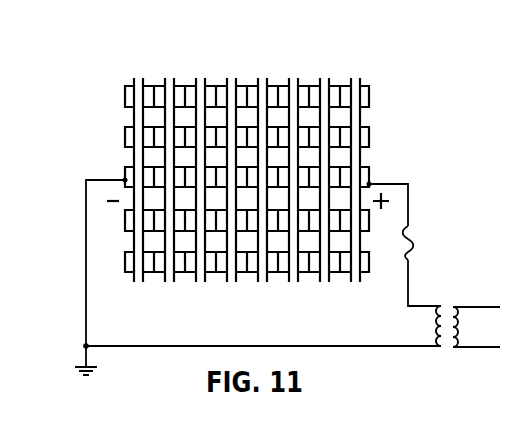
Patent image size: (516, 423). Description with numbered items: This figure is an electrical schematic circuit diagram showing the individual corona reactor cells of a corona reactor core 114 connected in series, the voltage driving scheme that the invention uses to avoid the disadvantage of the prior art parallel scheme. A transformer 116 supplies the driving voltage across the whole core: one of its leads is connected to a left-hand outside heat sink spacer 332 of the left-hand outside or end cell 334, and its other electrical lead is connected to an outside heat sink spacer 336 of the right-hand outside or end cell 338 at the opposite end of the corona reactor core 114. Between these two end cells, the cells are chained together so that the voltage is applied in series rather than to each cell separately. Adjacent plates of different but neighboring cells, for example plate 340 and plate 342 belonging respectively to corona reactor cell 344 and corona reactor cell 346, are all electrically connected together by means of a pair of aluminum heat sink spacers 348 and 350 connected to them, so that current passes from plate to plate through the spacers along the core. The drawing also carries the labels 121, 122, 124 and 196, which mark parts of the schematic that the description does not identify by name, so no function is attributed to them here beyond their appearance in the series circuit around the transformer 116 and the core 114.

The corona reactor core 114 is at (108, 77).
The electrode pair 121 is at (356, 82).
The left-hand outside heat sink spacer 332 is at (130, 276).
The left-hand outside or end cell 334 is at (150, 283).
The outside heat sink spacer 336 is at (362, 158).
The right-hand outside or end cell 338 is at (358, 121).
The plate 340 is at (258, 270).
The plate 342 is at (290, 266).
The corona reactor cell 344 is at (273, 283).
The corona reactor cell 346 is at (303, 284).
The aluminum heat sink spacer 348 is at (274, 83).
The aluminum heat sink spacer 350 is at (282, 83).
The primary winding 122 is at (423, 302).
The transformer 116 is at (450, 303).
The return conductor 124 is at (414, 343).
The reference numeral 196 is at (343, 422).